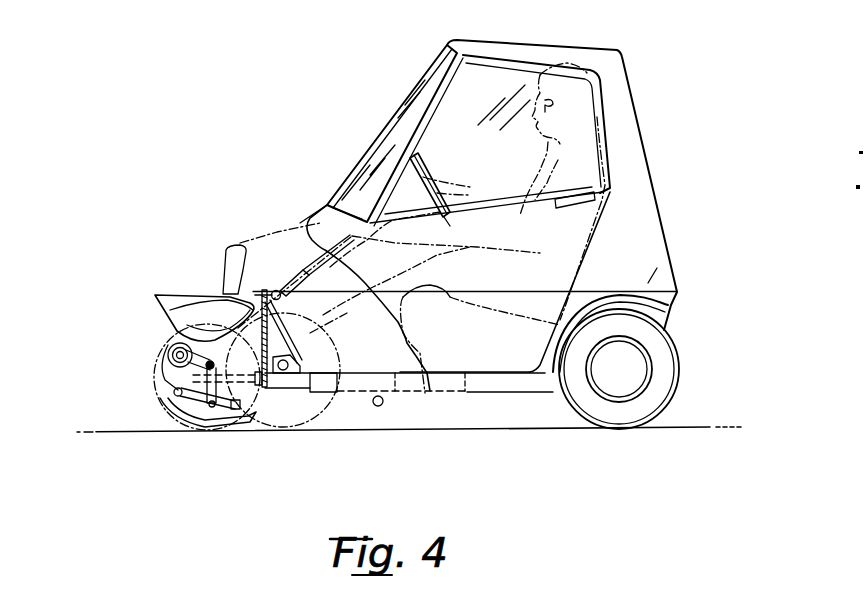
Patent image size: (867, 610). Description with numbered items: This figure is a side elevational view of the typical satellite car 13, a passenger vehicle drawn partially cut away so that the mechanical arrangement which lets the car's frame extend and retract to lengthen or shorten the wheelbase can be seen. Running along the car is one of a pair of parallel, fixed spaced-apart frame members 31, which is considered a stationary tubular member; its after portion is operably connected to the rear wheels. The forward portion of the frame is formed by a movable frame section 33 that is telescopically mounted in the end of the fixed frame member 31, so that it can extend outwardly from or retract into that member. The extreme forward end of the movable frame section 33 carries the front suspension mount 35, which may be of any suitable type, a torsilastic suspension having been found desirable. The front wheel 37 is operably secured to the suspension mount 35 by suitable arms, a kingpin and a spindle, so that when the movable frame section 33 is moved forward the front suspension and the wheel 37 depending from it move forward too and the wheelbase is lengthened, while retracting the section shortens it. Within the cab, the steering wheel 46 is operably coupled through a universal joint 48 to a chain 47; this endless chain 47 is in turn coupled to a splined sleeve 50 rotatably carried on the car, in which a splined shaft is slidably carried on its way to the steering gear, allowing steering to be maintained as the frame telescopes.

The satellite car 13 is at (328, 116).
The fixed frame member 31 is at (416, 390).
The movable frame section 33 is at (307, 392).
The front suspension mount 35 is at (183, 378).
The front wheel 37 is at (197, 420).
The steering wheel 46 is at (422, 162).
The chain 47 is at (265, 290).
The universal joint 48 is at (282, 287).
The splined sleeve 50 is at (286, 380).